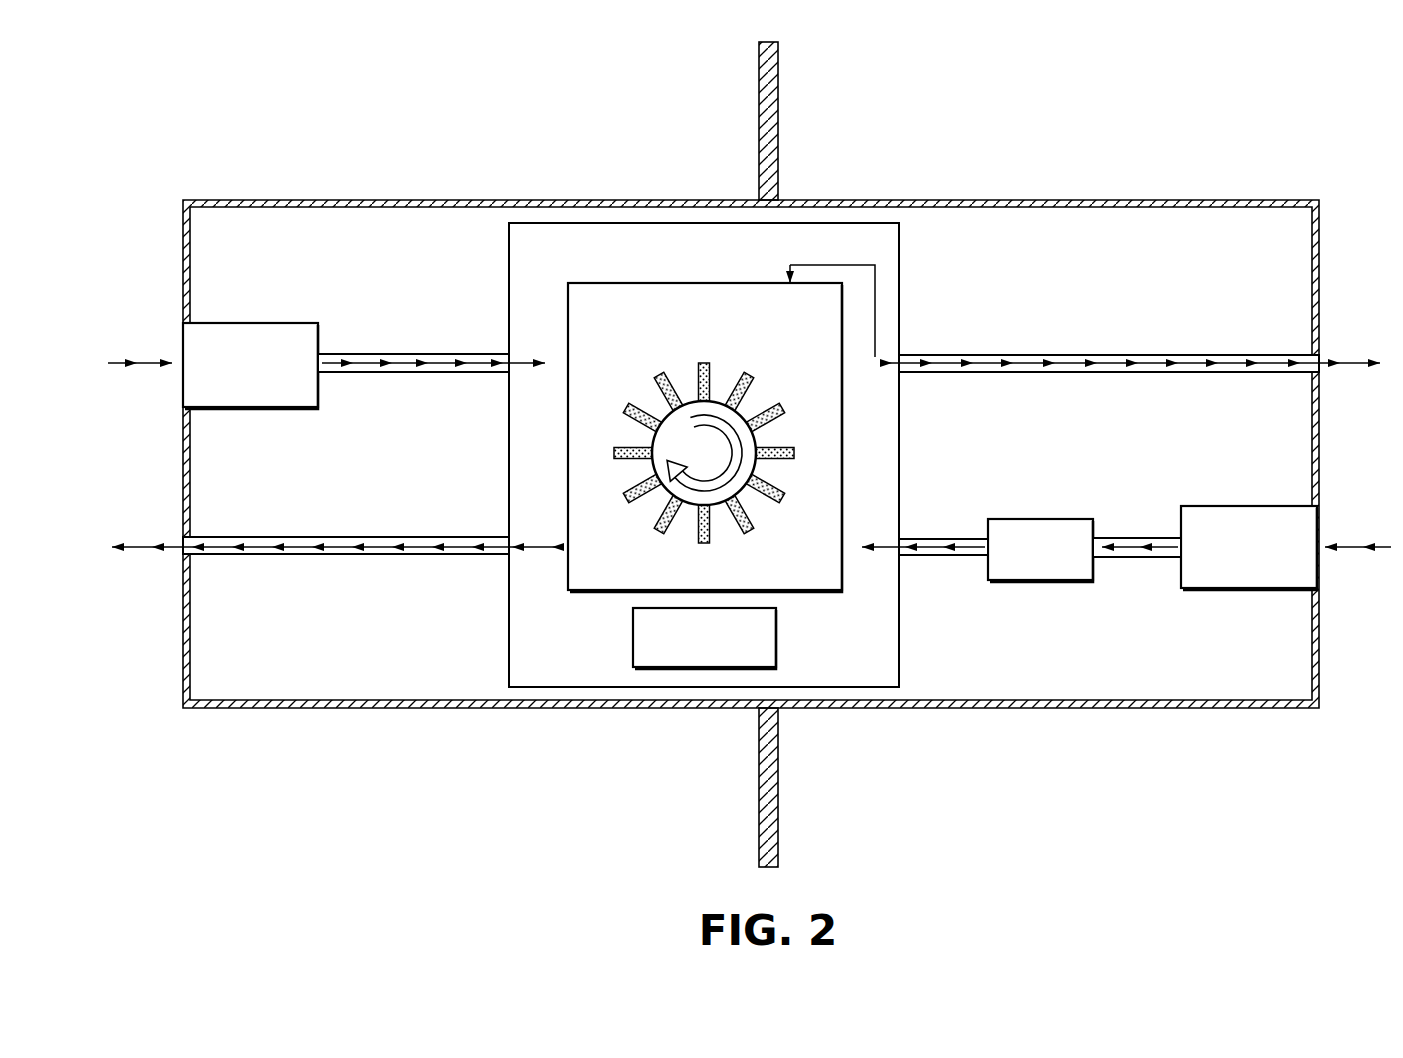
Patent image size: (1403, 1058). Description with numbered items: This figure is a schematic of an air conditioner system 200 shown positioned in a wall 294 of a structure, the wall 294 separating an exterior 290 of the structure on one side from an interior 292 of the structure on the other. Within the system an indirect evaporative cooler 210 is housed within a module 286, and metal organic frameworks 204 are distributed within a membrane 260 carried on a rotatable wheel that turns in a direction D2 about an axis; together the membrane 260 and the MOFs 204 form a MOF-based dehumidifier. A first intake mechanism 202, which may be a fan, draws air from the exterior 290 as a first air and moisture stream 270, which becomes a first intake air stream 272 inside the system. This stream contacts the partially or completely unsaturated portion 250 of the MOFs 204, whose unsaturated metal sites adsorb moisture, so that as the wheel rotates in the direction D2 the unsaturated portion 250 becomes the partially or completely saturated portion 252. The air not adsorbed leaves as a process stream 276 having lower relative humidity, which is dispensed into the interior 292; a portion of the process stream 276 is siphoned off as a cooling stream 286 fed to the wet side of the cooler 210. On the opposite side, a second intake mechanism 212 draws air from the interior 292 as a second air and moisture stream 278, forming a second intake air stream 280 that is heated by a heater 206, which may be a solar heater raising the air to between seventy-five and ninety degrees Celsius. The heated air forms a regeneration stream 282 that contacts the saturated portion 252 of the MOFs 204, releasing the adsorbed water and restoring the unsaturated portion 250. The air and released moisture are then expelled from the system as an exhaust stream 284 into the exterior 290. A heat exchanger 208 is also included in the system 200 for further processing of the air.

The air conditioner system 200 is at (214, 200).
The first intake mechanism 202 is at (289, 323).
The metal organic frameworks 204 is at (704, 460).
The heater 206 is at (1077, 582).
The heat exchanger 208 is at (633, 648).
The indirect evaporative cooler 210 is at (620, 283).
The second intake mechanism 212 is at (1212, 506).
The partially or completely unsaturated portion 250 is at (704, 456).
The partially or completely saturated portion 252 is at (724, 461).
The membrane 260 is at (790, 562).
The direction of rotation D2 is at (742, 455).
The first air and moisture stream 270 is at (124, 362).
The first intake air stream 272 is at (442, 360).
The process stream 276 is at (1360, 362).
The second air and moisture stream 278 is at (1372, 547).
The second intake air stream 280 is at (1120, 547).
The regeneration stream 282 is at (931, 547).
The exhaust stream 284 is at (297, 547).
The module 286 is at (508, 262).
The exterior of the structure 290 is at (483, 109).
The interior of the structure 292 is at (1055, 109).
The wall 294 is at (758, 68).